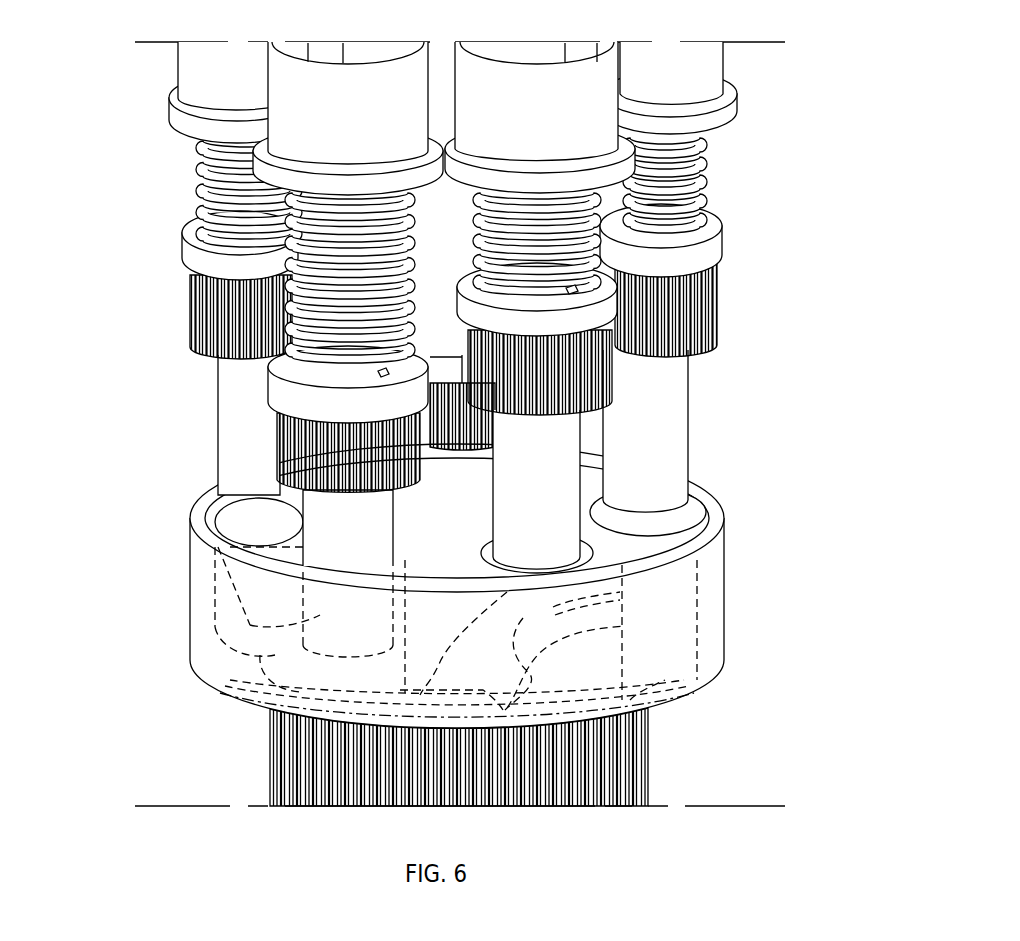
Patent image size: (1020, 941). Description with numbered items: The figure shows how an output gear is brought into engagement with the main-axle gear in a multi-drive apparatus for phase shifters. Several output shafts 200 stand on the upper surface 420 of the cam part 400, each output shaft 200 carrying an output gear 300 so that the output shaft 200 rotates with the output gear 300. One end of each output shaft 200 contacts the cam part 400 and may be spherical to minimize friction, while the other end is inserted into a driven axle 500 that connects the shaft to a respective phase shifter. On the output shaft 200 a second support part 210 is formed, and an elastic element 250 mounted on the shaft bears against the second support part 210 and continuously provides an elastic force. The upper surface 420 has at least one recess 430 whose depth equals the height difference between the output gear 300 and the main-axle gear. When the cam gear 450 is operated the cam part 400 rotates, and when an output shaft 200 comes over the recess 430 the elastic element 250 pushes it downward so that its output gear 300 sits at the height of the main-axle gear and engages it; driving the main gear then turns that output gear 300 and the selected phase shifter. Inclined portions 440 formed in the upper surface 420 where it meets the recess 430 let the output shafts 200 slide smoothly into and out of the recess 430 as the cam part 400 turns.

The output shaft 200 is at (335, 520).
The second support part 210 is at (297, 397).
The elastic element 250 is at (192, 277).
The output gear 300 is at (300, 453).
The cam part 400 is at (190, 572).
The upper surface 420 is at (505, 595).
The recess 430 is at (275, 658).
The inclined portion 440 is at (250, 601).
The cam gear 450 is at (302, 755).
The driven axle 500 is at (307, 103).